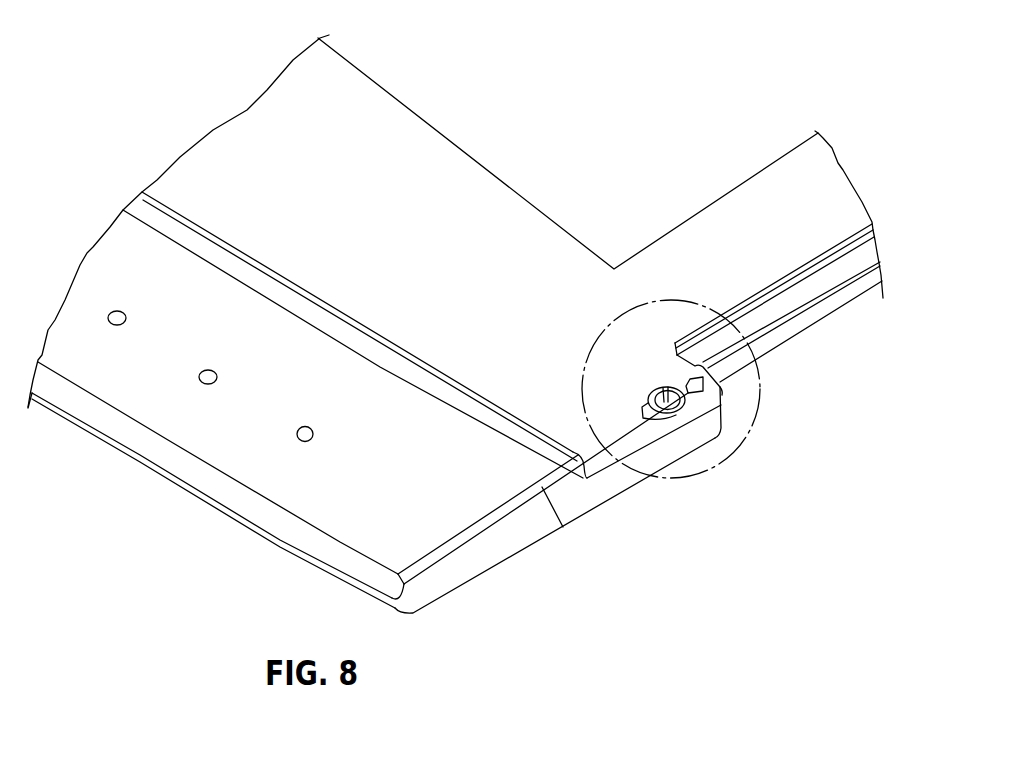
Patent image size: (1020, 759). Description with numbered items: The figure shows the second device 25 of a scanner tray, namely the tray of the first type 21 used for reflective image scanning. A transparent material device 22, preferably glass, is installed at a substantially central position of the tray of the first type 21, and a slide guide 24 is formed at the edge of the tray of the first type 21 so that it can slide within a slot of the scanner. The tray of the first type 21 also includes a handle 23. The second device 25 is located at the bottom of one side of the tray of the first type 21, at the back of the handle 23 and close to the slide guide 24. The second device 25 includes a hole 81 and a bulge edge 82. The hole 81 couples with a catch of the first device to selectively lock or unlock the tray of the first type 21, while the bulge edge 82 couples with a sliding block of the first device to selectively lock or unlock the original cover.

The tray of the first type 21 is at (181, 605).
The transparent material device 22 is at (561, 78).
The handle 23 is at (120, 398).
The slide guide 24 is at (778, 326).
The second device 25 is at (630, 473).
The hole 81 is at (668, 412).
The bulge edge 82 is at (725, 382).